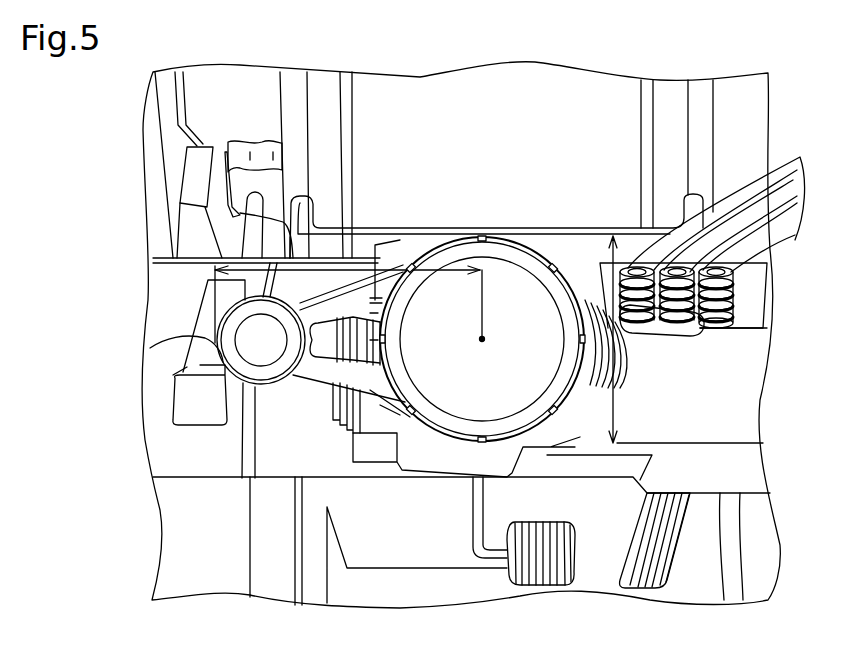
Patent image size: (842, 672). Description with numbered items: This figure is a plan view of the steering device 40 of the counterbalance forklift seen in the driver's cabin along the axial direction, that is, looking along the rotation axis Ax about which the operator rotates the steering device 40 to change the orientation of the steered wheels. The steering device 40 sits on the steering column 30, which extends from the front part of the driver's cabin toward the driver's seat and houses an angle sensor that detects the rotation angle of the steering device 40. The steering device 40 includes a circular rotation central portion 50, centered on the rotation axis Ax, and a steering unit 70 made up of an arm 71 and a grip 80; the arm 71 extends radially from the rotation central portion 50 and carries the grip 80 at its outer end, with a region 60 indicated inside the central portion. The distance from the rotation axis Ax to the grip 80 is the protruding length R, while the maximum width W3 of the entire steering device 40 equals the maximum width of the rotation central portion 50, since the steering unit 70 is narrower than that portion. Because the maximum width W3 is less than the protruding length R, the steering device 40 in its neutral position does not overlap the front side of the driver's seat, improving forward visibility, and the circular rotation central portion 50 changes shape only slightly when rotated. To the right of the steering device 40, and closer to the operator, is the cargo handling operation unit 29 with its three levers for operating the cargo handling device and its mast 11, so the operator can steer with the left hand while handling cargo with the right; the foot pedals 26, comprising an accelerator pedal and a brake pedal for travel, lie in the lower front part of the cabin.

The mast 11 is at (318, 92).
The foot pedals 26 is at (647, 577).
The cargo handling operation unit 29 is at (800, 158).
The steering column 30 is at (396, 243).
The steering device 40 is at (568, 173).
The rotation central portion 50 is at (537, 250).
The rotating electric machine 60 is at (444, 308).
The steering unit 70 is at (184, 289).
The arm 71 is at (313, 385).
The grip 80 is at (150, 347).
The protruding length R is at (337, 265).
The rotation axis Ax is at (482, 339).
The maximum width of the entire steering device W3 is at (613, 405).